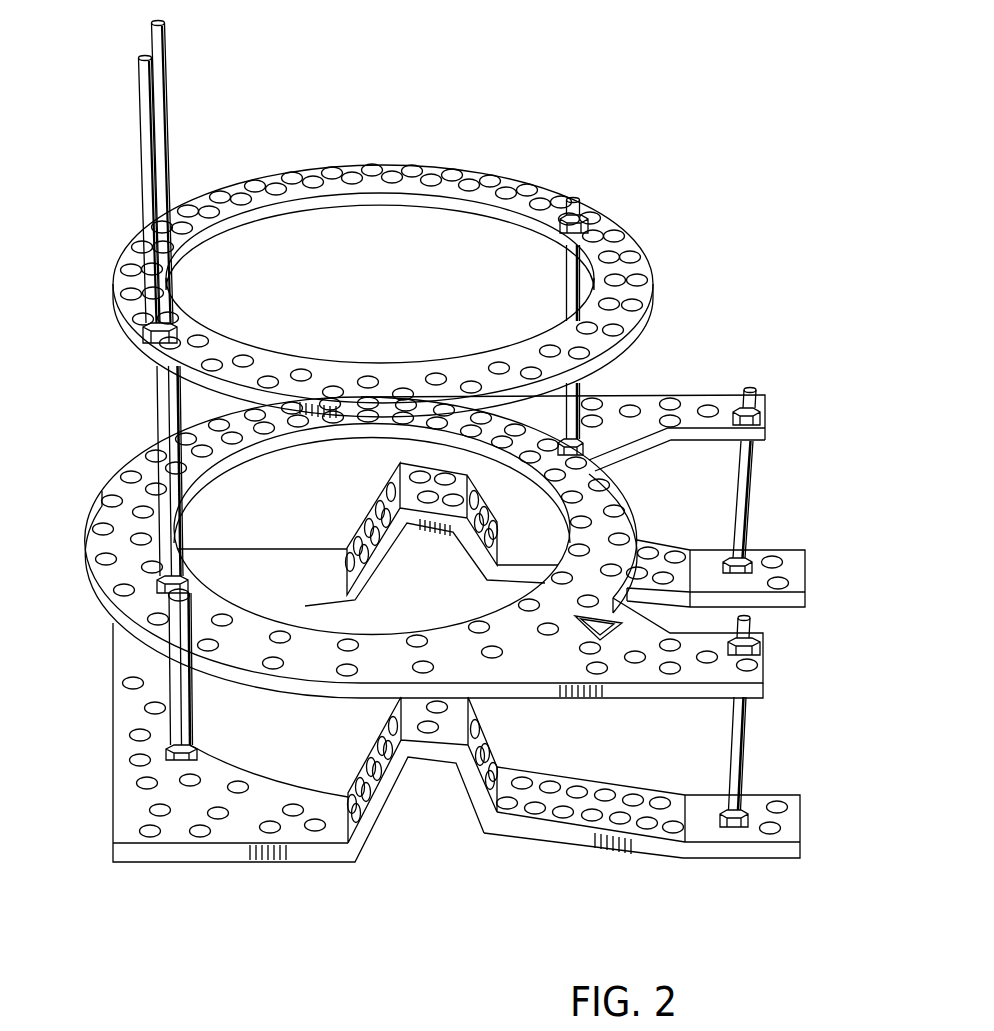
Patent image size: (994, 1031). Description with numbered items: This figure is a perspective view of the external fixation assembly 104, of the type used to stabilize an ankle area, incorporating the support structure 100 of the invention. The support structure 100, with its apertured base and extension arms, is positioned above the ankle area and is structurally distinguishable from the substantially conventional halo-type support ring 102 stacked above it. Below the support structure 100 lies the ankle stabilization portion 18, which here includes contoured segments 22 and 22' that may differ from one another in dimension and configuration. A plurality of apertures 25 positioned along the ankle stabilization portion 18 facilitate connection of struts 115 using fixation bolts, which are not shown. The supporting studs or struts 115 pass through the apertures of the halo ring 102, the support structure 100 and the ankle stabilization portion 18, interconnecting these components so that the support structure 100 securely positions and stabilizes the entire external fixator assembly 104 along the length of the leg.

The support structure 100 is at (628, 482).
The halo-type support ring 102 is at (493, 171).
The external fixation assembly 104 is at (86, 341).
The supporting studs 115 is at (166, 24).
The ankle stabilization portion 18 is at (89, 847).
The contoured segment 22 is at (728, 637).
The contoured segment 22' is at (610, 867).
The apertures 25 is at (200, 838).